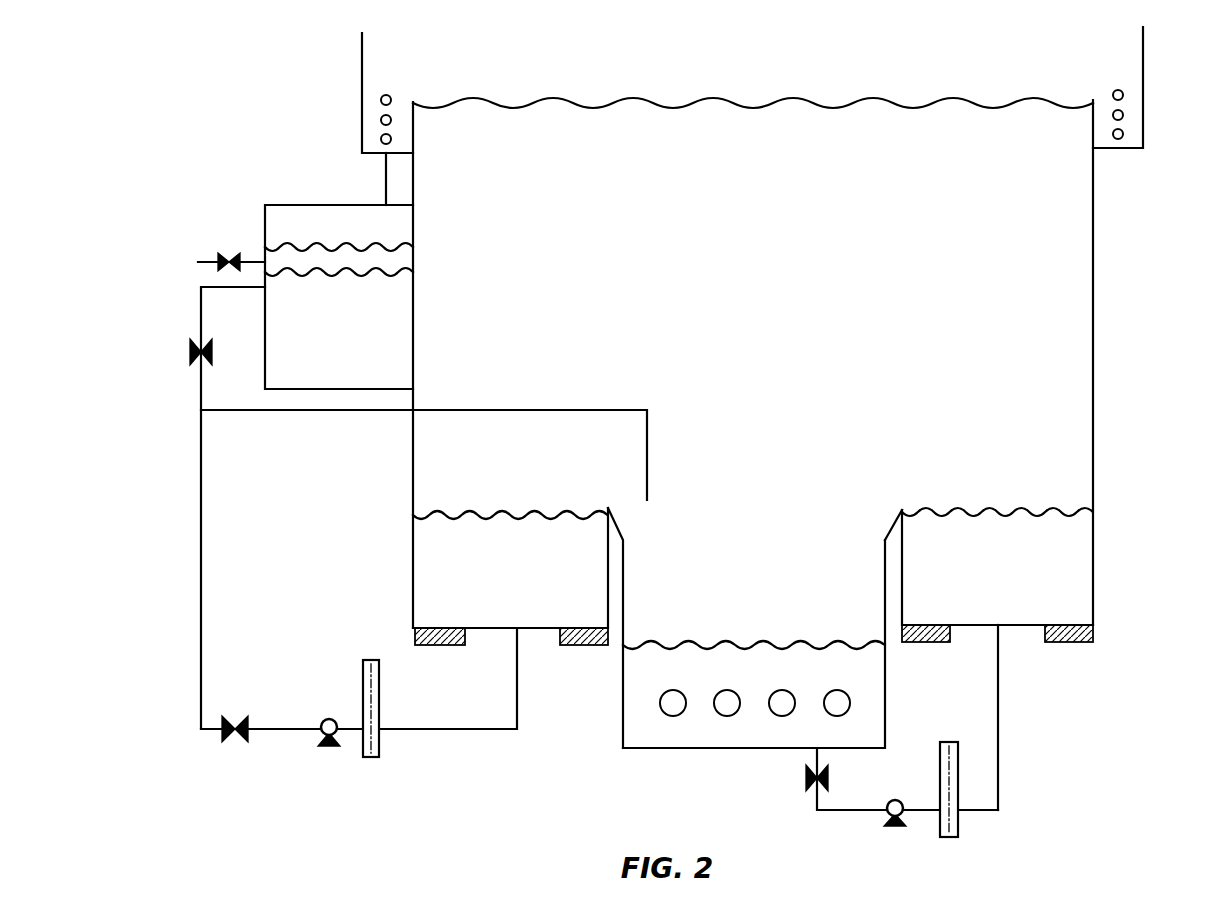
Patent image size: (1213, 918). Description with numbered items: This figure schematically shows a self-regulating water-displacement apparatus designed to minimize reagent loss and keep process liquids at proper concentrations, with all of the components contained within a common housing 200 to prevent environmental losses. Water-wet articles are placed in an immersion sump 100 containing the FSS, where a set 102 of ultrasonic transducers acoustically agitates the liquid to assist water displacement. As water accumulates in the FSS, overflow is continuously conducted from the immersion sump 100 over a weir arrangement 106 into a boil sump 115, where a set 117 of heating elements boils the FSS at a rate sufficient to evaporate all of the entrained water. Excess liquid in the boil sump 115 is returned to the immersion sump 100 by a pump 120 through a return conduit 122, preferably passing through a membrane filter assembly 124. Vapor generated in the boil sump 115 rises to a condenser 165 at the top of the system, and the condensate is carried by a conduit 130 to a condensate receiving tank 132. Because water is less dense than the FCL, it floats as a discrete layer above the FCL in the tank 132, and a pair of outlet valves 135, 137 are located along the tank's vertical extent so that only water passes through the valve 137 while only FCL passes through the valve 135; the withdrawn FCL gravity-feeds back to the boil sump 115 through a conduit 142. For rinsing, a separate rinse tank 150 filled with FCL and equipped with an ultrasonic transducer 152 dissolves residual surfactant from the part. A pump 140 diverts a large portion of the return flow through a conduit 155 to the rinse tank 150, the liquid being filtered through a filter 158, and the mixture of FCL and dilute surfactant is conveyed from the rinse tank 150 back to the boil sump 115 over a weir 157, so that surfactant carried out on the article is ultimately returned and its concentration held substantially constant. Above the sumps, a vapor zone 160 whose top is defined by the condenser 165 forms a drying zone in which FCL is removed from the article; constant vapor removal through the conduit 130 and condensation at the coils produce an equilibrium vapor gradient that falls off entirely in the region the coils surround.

The immersion sump 100 is at (1090, 540).
The set of ultrasonic transducers 102 is at (943, 647).
The weir arrangement 106 is at (901, 506).
The boil sump 115 is at (638, 747).
The set of heating elements 117 is at (830, 716).
The pump 120 is at (886, 822).
The return conduit 122 is at (998, 742).
The membrane filter assembly 124 is at (959, 822).
The conduit 130 is at (386, 190).
The condensate receiving tank 132 is at (263, 335).
The outlet valve 135 is at (192, 352).
The outlet valve 137 is at (216, 252).
The pump 140 is at (318, 742).
The conduit 142 is at (528, 409).
The rinse tank 150 is at (499, 601).
The ultrasonic transducer 152 is at (438, 647).
The conduit 155 is at (490, 733).
The weir 157 is at (620, 506).
The filter 158 is at (380, 745).
The vapor zone 160 is at (751, 243).
The condenser 165 is at (386, 94).
The common housing 200 is at (362, 77).